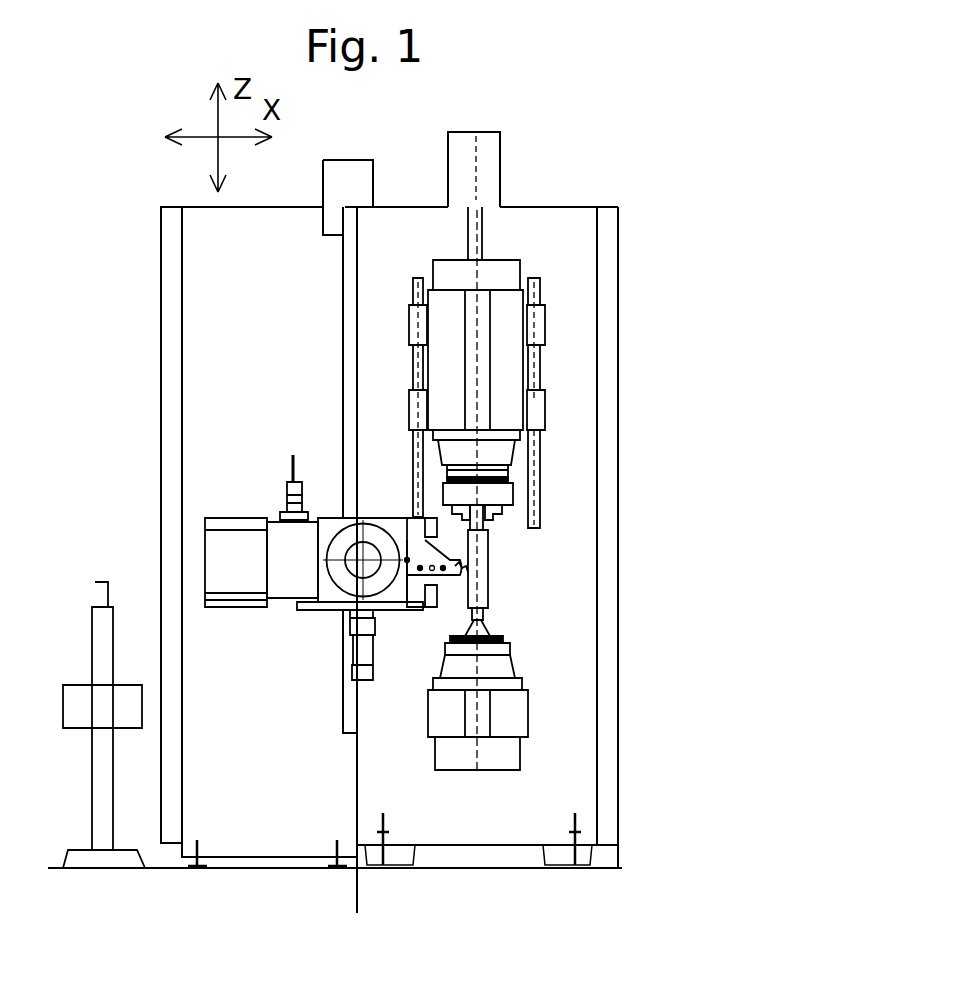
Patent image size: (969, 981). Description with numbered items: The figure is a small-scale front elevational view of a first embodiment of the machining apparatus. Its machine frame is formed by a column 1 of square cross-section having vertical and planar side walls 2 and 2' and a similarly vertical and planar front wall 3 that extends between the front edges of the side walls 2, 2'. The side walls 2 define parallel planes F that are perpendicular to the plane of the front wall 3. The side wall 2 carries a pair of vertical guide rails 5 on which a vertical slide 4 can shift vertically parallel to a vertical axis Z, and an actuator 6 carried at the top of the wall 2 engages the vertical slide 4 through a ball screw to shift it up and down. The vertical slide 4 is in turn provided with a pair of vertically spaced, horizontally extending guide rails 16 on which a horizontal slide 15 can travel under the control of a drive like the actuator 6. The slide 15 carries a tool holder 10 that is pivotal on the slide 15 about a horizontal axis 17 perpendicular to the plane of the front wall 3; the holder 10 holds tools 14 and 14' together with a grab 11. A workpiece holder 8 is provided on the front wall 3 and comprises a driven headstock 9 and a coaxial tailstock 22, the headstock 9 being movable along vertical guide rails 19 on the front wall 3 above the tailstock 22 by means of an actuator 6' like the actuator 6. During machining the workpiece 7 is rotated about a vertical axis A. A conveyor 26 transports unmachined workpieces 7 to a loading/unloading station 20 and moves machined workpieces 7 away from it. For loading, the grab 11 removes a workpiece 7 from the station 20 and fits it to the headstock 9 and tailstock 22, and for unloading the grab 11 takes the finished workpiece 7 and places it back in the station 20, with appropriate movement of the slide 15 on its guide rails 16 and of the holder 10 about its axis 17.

The column 1 is at (564, 174).
The side wall 2 is at (272, 560).
The side wall 2' is at (512, 526).
The front wall 3 is at (578, 598).
The vertical slide 4 is at (245, 558).
The vertical guide rails 5 is at (350, 310).
The actuator 6 is at (365, 181).
The actuator 6' is at (464, 151).
The workpiece 7 is at (492, 599).
The workpiece holder 8 is at (594, 406).
The headstock 9 is at (510, 355).
The tool holder 10 is at (336, 518).
The grab 11 is at (366, 650).
The tool 14 is at (515, 562).
The tool 14' is at (278, 465).
The horizontal slide 15 is at (303, 612).
The guide rails 16 is at (244, 600).
The horizontal axis 17 is at (372, 568).
The vertical guide rails 19 is at (540, 512).
The loading/unloading station 20 is at (100, 548).
The tailstock 22 is at (510, 758).
The conveyor 26 is at (82, 700).
The vertical axis A is at (478, 770).
The plane F is at (357, 898).